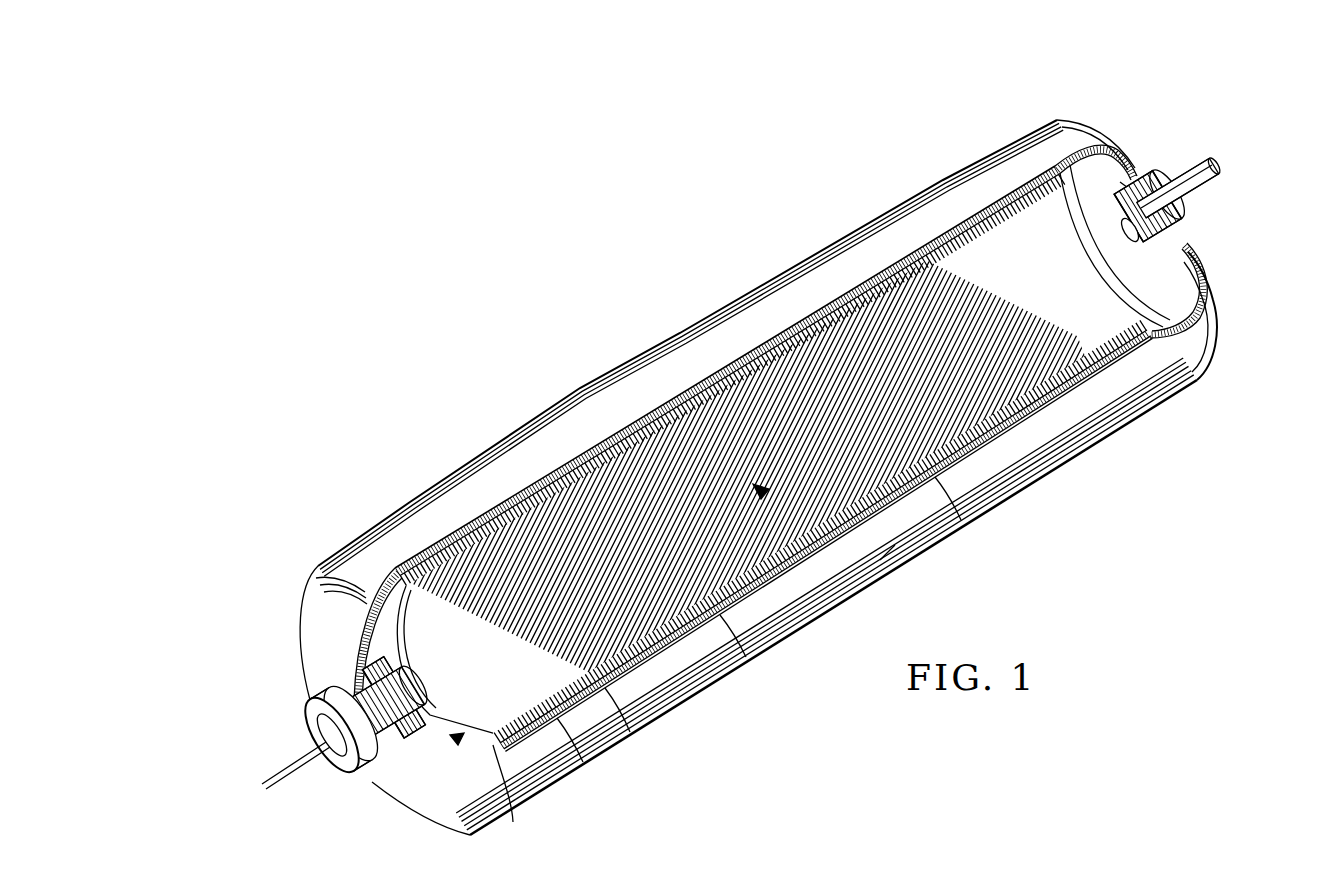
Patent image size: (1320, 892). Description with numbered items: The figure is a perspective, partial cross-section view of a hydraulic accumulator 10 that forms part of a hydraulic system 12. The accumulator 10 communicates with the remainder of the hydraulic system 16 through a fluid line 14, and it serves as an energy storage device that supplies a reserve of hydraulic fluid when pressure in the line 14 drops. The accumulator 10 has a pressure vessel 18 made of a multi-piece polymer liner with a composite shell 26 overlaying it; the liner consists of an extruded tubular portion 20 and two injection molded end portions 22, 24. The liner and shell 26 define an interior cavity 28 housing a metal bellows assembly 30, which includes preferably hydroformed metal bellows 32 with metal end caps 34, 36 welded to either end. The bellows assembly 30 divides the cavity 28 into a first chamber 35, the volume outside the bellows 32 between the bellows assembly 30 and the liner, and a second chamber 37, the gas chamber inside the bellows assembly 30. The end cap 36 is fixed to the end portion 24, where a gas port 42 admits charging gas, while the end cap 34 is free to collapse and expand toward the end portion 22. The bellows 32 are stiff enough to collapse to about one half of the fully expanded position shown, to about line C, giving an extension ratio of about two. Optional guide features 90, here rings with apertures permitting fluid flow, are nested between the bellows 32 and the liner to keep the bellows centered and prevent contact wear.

The hydraulic accumulator 10 is at (640, 215).
The hydraulic system 12 is at (220, 710).
The fluid line 14 is at (290, 762).
The remainder of the hydraulic system 16 is at (278, 822).
The pressure vessel 18 is at (500, 425).
The tubular portion 20 is at (818, 310).
The end portion 22 is at (362, 640).
The end portion 24 is at (1127, 160).
The composite shell 26 is at (645, 355).
The interior cavity 28 is at (658, 718).
The bellows assembly 30 is at (600, 425).
The metal bellows 32 is at (733, 375).
The end cap 34 is at (380, 586).
The first chamber 35 is at (512, 824).
The end cap 36 is at (1143, 178).
The second chamber 37 is at (880, 560).
The gas port 42 is at (1200, 215).
The guide features 90 is at (588, 762).
The line C is at (885, 606).